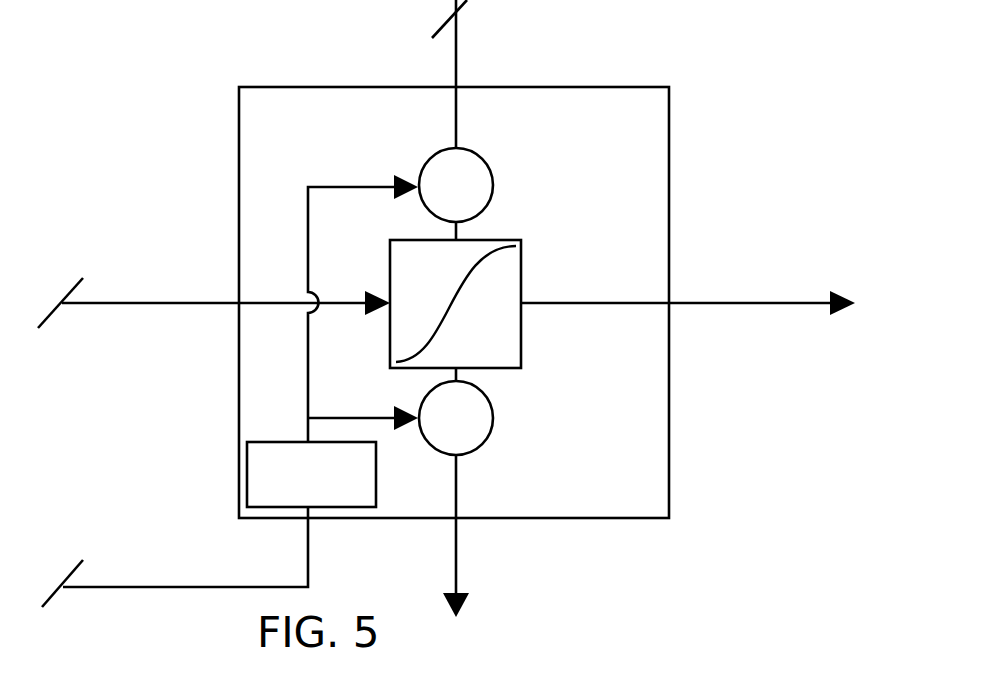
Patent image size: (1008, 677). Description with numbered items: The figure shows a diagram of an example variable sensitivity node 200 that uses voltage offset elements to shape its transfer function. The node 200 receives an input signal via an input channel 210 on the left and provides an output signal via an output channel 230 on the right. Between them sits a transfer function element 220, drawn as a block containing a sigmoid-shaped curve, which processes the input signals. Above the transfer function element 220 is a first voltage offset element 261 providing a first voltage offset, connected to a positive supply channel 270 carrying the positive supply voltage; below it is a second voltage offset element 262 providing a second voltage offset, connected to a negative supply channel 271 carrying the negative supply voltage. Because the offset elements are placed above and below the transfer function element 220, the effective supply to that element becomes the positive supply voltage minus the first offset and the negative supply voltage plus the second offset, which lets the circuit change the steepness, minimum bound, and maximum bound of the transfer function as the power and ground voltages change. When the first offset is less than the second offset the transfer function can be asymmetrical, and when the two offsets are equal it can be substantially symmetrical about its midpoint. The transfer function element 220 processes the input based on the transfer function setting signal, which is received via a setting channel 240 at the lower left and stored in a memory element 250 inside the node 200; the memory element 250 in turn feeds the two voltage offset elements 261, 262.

The variable sensitivity node 200 is at (454, 302).
The input channel 210 is at (143, 305).
The transfer function element 220 is at (455, 304).
The output channel 230 is at (760, 305).
The setting channel 240 is at (148, 588).
The memory element 250 is at (332, 341).
The voltage offset element 261 is at (489, 203).
The voltage offset element 262 is at (487, 440).
The positive supply channel 270 is at (457, 67).
The negative supply channel 271 is at (457, 525).